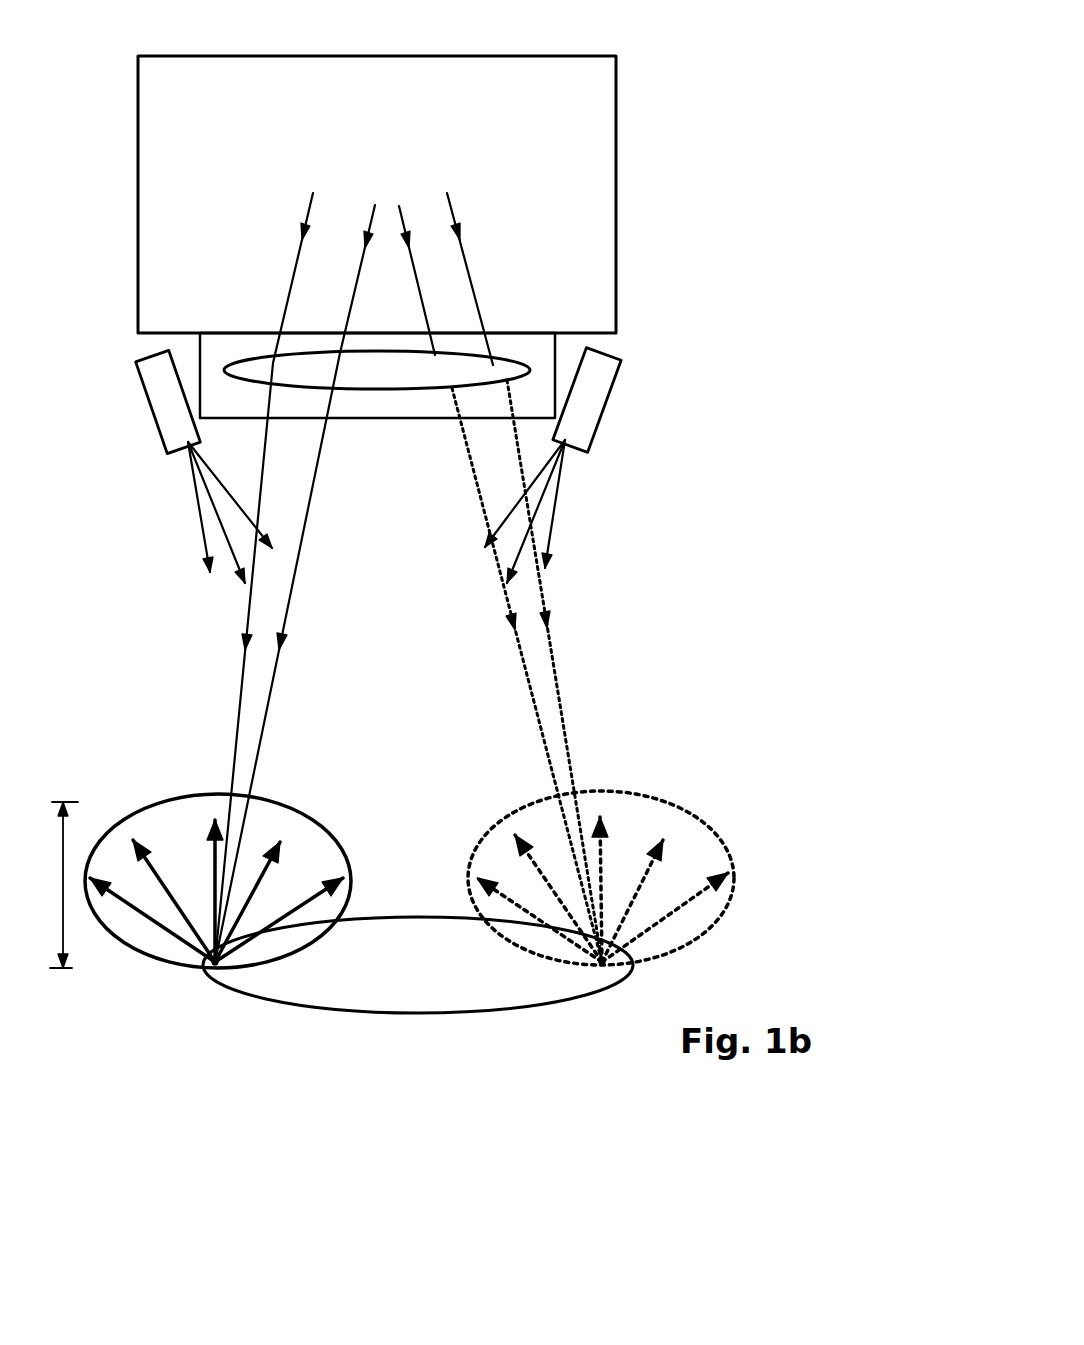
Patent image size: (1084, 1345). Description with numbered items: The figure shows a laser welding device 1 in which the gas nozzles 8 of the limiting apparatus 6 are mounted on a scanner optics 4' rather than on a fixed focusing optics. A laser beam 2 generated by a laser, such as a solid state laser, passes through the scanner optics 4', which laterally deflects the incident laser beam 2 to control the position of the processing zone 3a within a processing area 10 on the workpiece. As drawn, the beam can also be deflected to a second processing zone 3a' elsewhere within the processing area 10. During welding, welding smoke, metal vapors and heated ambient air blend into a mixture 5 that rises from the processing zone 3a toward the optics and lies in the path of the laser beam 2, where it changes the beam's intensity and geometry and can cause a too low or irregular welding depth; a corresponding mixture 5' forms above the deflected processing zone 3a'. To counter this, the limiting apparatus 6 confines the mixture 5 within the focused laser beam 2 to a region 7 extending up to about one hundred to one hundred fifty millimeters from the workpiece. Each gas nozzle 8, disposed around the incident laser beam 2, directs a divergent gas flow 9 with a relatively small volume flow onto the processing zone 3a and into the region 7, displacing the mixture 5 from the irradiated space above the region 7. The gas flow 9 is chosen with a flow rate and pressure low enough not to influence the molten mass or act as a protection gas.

The laser welding device 1 is at (742, 145).
The laser beam 2 is at (293, 275).
The processing zone 3a is at (174, 1024).
The deflected processing zone 3a' is at (551, 1109).
The scanner optics 4' is at (457, 318).
The mixture of welding gases and heated ambient air 5 is at (227, 864).
The mixture above deflected processing zone 5' is at (628, 863).
The limiting apparatus 6 is at (416, 400).
The region 7 is at (65, 842).
The gas nozzle 8 is at (160, 408).
The gas flow 9 is at (198, 515).
The processing area 10 is at (410, 983).